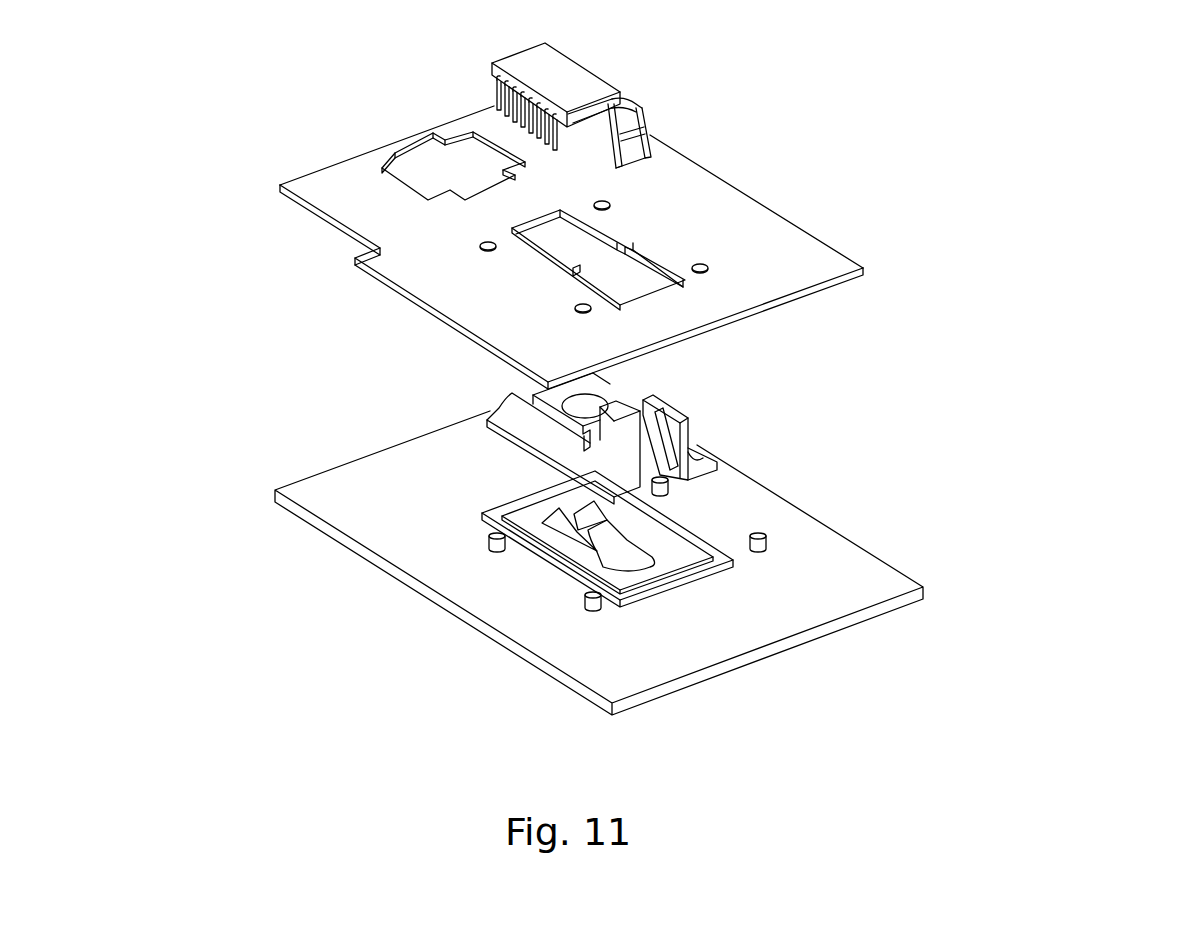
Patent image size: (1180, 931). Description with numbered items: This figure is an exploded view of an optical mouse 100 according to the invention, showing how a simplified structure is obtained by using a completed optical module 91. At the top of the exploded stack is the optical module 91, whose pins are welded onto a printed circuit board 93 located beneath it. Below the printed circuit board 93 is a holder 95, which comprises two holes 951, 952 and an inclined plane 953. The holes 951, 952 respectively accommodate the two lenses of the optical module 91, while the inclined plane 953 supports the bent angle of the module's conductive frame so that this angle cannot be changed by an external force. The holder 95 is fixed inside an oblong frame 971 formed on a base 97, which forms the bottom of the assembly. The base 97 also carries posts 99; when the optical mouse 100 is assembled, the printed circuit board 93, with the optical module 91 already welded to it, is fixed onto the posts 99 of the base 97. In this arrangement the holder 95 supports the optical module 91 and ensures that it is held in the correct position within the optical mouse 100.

The optical mouse 100 is at (1010, 130).
The optical module 91 is at (570, 80).
The printed circuit board 93 is at (792, 236).
The holder 95 is at (643, 423).
The hole 951 is at (593, 402).
The hole 952 is at (633, 456).
The inclined plane 953 is at (692, 442).
The base 97 is at (762, 496).
The oblong frame 971 is at (684, 578).
The posts 99 is at (767, 545).